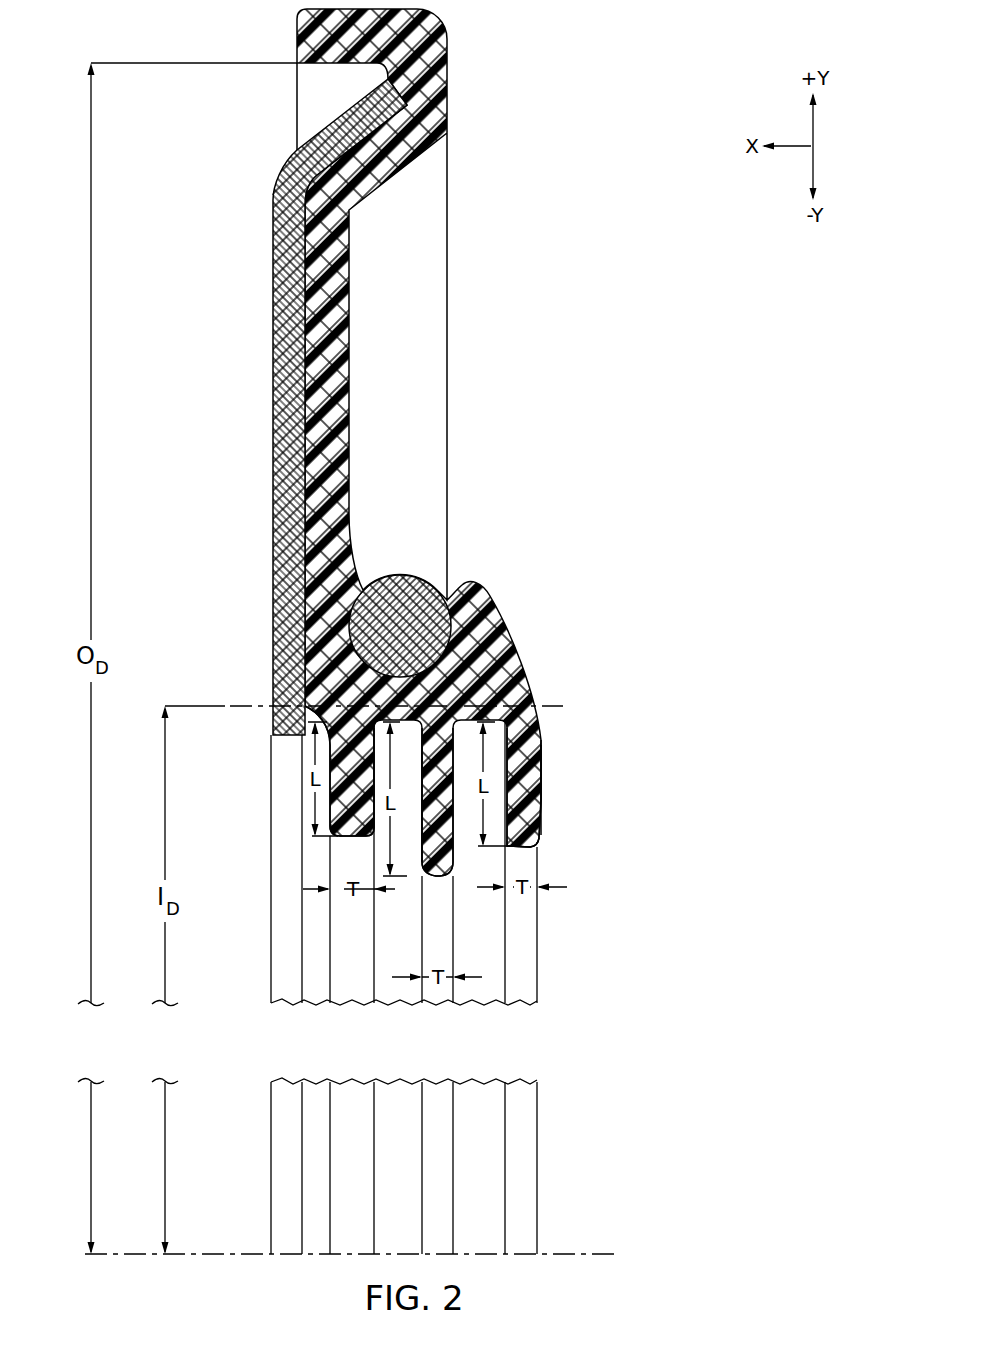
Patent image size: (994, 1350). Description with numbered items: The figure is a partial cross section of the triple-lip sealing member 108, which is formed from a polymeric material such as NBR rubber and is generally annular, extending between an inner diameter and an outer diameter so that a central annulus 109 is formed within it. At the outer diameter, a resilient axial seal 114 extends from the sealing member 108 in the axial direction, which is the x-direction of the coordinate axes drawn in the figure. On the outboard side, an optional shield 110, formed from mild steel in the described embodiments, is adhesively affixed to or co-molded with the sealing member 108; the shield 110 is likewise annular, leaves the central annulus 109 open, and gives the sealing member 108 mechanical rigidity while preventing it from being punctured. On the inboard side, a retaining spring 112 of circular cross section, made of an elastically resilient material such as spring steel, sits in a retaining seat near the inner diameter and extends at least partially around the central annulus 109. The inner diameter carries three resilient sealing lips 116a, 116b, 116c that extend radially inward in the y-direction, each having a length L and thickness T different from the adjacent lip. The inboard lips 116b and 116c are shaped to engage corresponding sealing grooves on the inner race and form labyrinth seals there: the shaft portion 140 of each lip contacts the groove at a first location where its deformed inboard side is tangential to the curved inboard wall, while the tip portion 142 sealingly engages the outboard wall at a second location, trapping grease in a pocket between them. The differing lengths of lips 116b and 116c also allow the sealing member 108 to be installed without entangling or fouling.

The sealing member 108 is at (436, 489).
The central annulus 109 is at (557, 967).
The shield 110 is at (273, 249).
The retaining spring 112 is at (400, 574).
The resilient axial seal 114 is at (297, 41).
The resilient sealing lip 116a is at (327, 849).
The resilient sealing lip 116b is at (442, 891).
The resilient sealing lip 116c is at (556, 764).
The shaft portion 140 is at (423, 842).
The tip portion 142 is at (522, 848).